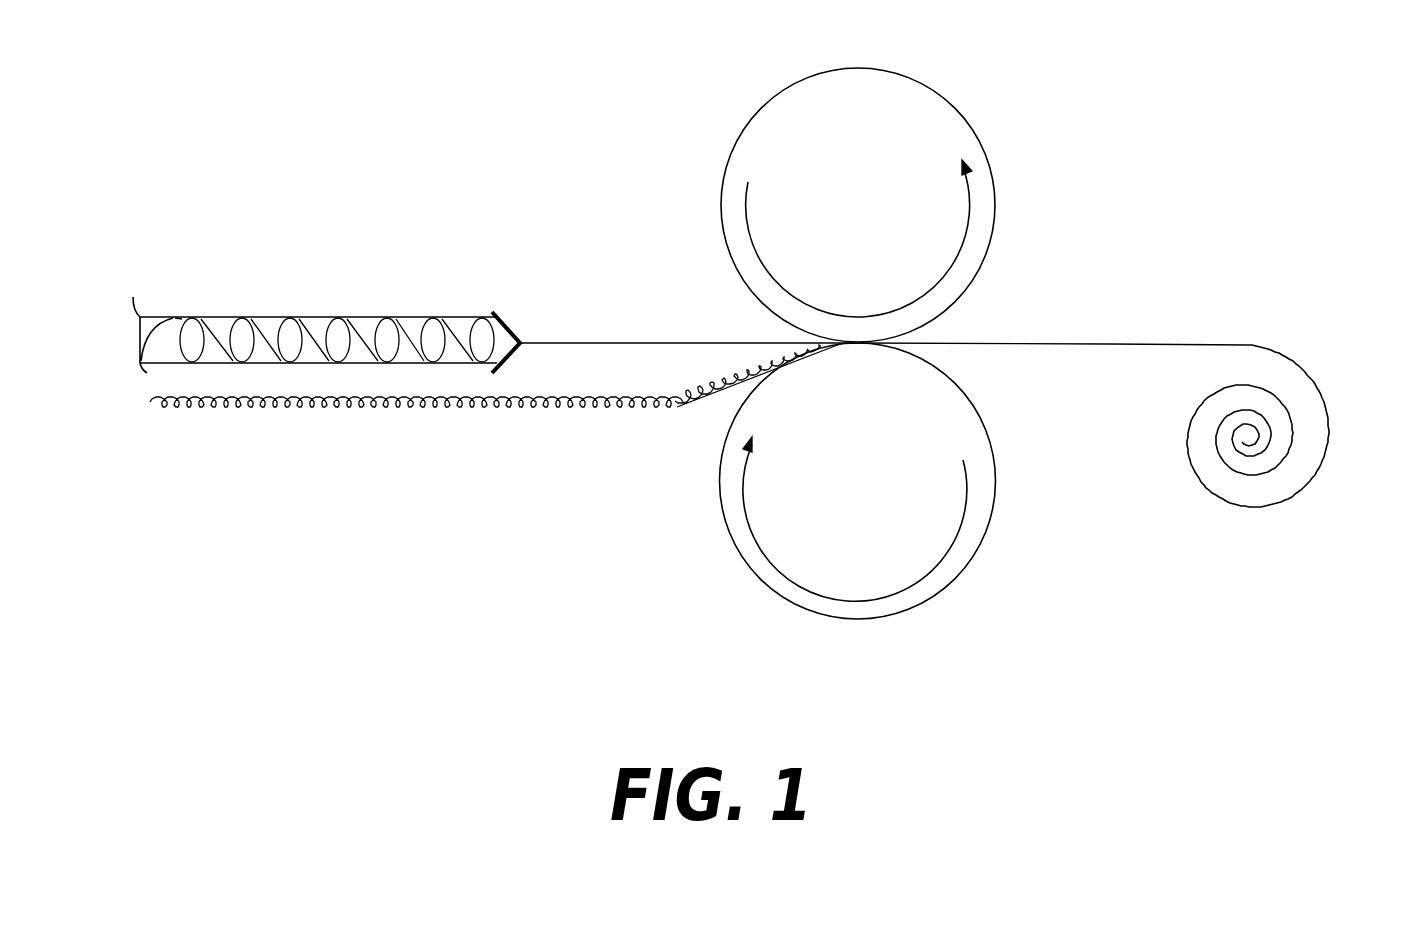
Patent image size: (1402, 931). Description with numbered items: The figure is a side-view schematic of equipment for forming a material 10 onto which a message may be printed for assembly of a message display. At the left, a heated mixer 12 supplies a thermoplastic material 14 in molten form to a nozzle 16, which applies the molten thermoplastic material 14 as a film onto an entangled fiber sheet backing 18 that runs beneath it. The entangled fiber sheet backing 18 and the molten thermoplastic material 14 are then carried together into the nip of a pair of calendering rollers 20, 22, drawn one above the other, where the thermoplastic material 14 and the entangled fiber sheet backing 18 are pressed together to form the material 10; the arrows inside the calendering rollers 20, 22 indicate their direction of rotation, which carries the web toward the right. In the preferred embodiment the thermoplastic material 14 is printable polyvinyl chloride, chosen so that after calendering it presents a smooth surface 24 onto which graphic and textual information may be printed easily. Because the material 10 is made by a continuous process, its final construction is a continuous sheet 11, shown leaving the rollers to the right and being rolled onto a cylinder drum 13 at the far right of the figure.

The material 10 is at (1022, 316).
The continuous sheet 11 is at (1185, 345).
The heated mixer 12 is at (288, 317).
The cylinder drum 13 is at (1327, 427).
The thermoplastic material 14 is at (608, 342).
The nozzle 16 is at (510, 327).
The entangled fiber sheet backing 18 is at (463, 410).
The calendering roller 20 is at (948, 115).
The calendering roller 22 is at (843, 608).
The smooth surface 24 is at (1092, 345).